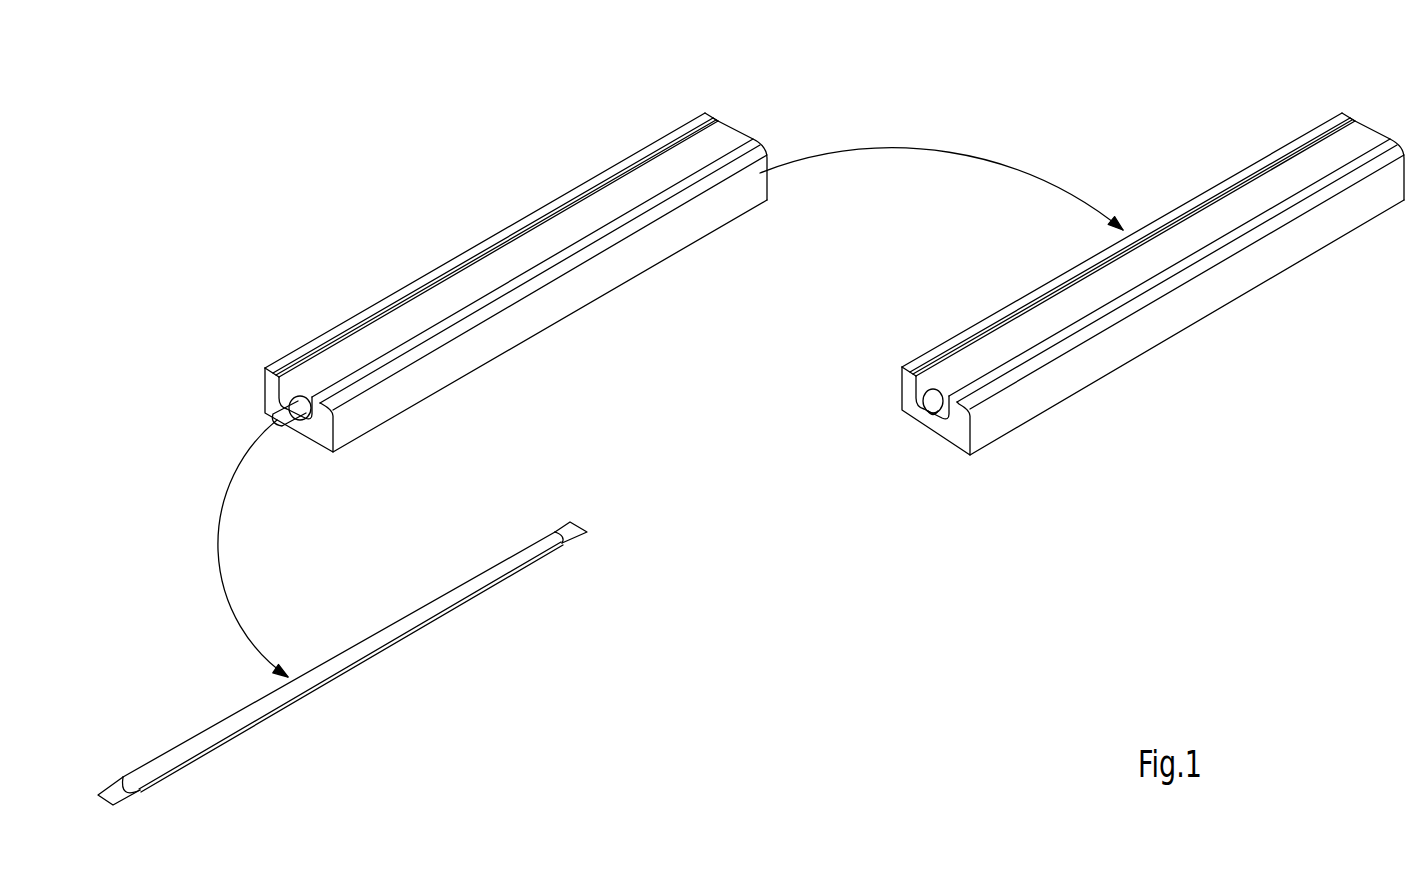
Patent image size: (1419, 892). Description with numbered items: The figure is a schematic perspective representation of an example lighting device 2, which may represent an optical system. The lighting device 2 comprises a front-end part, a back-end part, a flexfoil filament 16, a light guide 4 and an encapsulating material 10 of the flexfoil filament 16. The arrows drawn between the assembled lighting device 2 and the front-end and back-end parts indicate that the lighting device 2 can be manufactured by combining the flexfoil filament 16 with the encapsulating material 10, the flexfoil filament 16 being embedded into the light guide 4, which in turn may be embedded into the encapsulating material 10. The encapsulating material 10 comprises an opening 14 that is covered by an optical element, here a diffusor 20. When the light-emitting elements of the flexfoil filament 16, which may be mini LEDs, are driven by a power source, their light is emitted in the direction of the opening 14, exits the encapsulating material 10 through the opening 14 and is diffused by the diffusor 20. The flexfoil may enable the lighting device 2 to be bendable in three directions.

The lighting device 2 is at (308, 127).
The encapsulating material 10 is at (803, 284).
The diffusor 20 is at (502, 262).
The opening 14 is at (1195, 227).
The light guide 4 is at (290, 389).
The flexfoil filament 16 is at (420, 617).